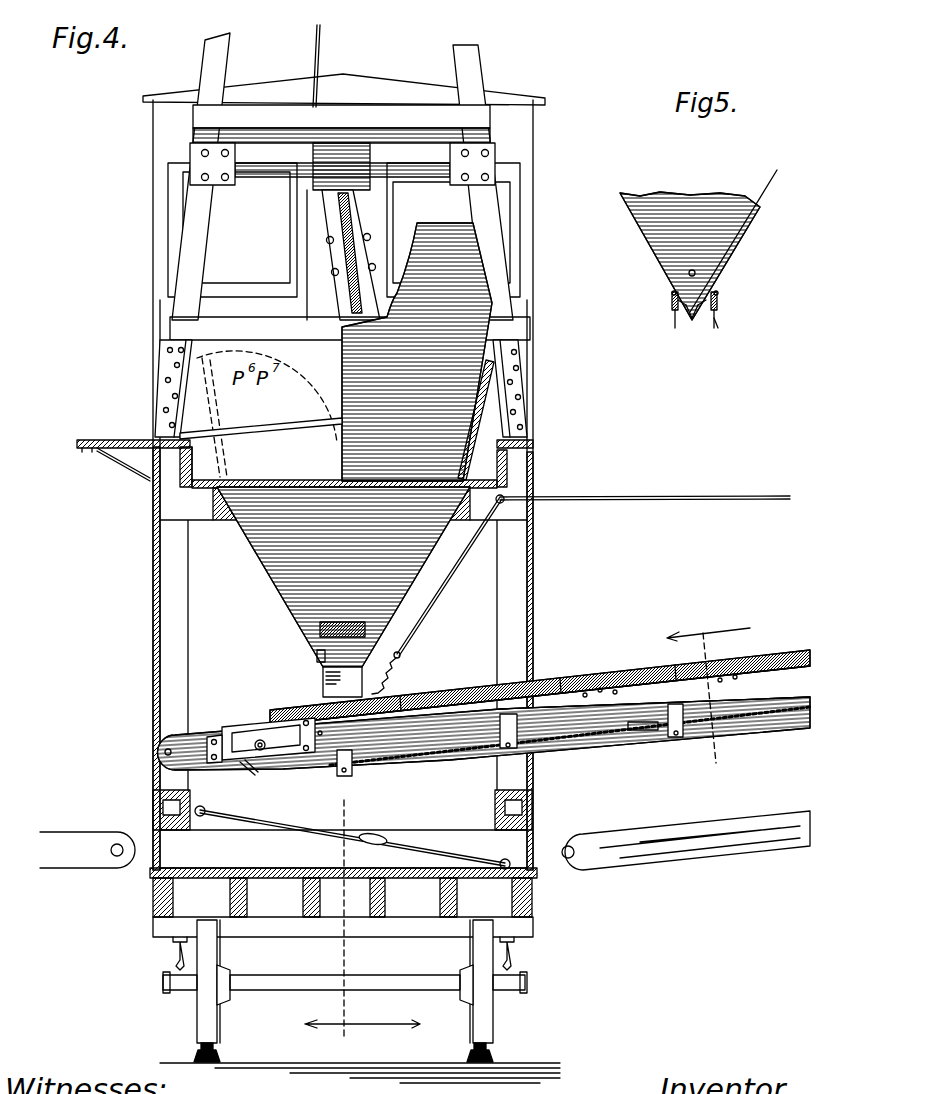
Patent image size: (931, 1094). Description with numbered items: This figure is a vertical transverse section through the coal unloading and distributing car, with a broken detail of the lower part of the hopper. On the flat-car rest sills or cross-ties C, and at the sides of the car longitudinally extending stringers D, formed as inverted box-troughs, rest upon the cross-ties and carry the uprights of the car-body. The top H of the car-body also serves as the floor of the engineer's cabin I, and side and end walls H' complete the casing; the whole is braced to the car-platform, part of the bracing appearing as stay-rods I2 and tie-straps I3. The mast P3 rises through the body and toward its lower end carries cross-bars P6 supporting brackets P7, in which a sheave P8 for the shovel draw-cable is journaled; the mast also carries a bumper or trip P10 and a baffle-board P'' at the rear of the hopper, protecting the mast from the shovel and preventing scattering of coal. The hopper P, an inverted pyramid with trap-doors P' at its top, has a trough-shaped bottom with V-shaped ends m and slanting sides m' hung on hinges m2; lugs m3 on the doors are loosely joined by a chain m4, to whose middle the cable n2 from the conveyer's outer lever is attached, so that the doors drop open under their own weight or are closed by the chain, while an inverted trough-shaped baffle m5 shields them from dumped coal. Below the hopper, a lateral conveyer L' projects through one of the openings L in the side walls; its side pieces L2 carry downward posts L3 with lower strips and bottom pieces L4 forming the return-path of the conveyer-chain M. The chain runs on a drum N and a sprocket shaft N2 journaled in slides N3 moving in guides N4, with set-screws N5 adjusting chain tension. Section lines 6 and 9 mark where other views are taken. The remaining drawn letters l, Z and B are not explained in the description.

In FIG. 4, the mast P3 is at (222, 60).
In FIG. 4, the cross-bars P6 is at (357, 118).
In FIG. 4, the brackets P7 is at (363, 223).
In FIG. 4, the sheave P8 is at (345, 205).
In FIG. 4, the bumper or trip P10 is at (327, 162).
In FIG. 4, the engineer's cabin I is at (527, 144).
In FIG. 4, the slanted bracket l is at (167, 417).
In FIG. 4, the top of the car-body H is at (267, 414).
In FIG. 4, the baffle-board P'' is at (463, 352).
In FIG. 4, the trap-doors P' is at (337, 421).
In FIG. 4, the side and end walls H' is at (347, 655).
In FIG. 4, the hopper P is at (343, 577).
In FIG. 5, the hopper P is at (690, 239).
In FIG. 4, the baffle or deflector m5 is at (338, 650).
In FIG. 4, the V-shaped ends m is at (325, 679).
In FIG. 5, the V-shaped ends m is at (683, 341).
In FIG. 4, the hinges m2 is at (317, 653).
In FIG. 5, the hinges m2 is at (738, 292).
In FIG. 4, the rod or cable n2 is at (423, 610).
In FIG. 5, the rod or cable n2 is at (753, 190).
In FIG. 4, the chain m4 is at (400, 656).
In FIG. 5, the chain m4 is at (718, 350).
In FIG. 4, the lugs m3 is at (372, 693).
In FIG. 5, the lugs m3 is at (717, 326).
In FIG. 4, the stringers D is at (150, 800).
In FIG. 4, the stay-rods I2 is at (437, 845).
In FIG. 4, the draw arm Z is at (577, 815).
In FIG. 4, the sills or cross-ties C is at (340, 850).
In FIG. 4, the tie-straps I3 is at (537, 913).
In FIG. 4, the wheel axle B is at (345, 981).
In FIG. 4, the section line 6 is at (362, 1038).
In FIG. 4, the side pieces or planks L2 is at (782, 690).
In FIG. 4, the lateral conveyer L' is at (540, 673).
In FIG. 4, the openings L is at (457, 692).
In FIG. 4, the conveyer-chain M is at (400, 757).
In FIG. 4, the posts L3 is at (680, 740).
In FIG. 4, the lower side strips and bottom pieces L4 is at (640, 742).
In FIG. 4, the set-screws N5 is at (312, 752).
In FIG. 4, the guides N4 is at (228, 732).
In FIG. 4, the drum N is at (262, 762).
In FIG. 4, the shaft N2 is at (262, 753).
In FIG. 4, the slides N3 is at (253, 753).
In FIG. 4, the section line 9 is at (708, 688).
In FIG. 5, the slanting sides m' is at (697, 342).